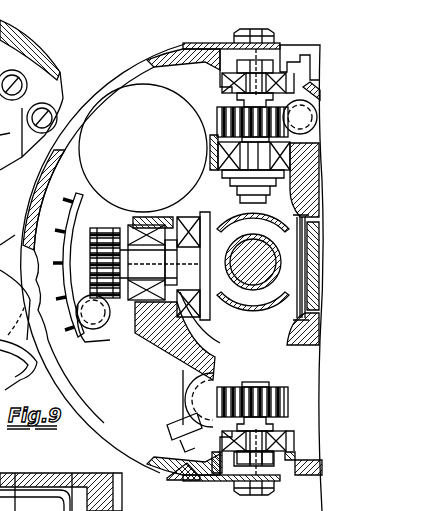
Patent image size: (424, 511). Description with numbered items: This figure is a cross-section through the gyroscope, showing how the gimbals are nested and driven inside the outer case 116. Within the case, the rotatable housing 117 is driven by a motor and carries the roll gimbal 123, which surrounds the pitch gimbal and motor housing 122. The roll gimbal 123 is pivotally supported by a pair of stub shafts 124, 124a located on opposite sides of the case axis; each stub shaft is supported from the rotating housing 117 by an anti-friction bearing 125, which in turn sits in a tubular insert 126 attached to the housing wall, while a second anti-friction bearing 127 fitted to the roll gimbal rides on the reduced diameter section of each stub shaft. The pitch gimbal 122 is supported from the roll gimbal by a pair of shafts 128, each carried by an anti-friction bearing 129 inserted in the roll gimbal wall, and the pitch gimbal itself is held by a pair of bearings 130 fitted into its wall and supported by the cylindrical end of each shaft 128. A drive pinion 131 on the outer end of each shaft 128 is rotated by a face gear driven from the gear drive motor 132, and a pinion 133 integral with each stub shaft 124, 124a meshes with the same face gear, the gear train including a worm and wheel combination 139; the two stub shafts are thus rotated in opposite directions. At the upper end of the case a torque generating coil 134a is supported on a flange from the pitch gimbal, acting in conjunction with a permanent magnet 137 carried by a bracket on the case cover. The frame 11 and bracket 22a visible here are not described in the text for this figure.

The frame 11 is at (20, 230).
The bracket 22a is at (15, 292).
The outer case 116 is at (30, 52).
The rotatable housing 117 is at (167, 46).
The pitch gimbal and motor housing 122 is at (236, 301).
The roll gimbal 123 is at (319, 163).
The stub shaft 124 is at (239, 478).
The stub shaft 124a is at (246, 152).
The anti-friction bearing 125 is at (284, 445).
The tubular insert 126 is at (282, 477).
The second anti-friction bearing 127 is at (187, 372).
The shaft 128 is at (133, 230).
The anti-friction bearing 129 is at (121, 195).
The bearing 130 is at (172, 217).
The drive pinion 131 is at (97, 338).
The gear drive motor 132 is at (6, 397).
The pinion 133 is at (218, 112).
The torque generating coil 134a is at (73, 475).
The permanent magnet 137 is at (25, 480).
The worm and wheel combination 139 is at (318, 138).